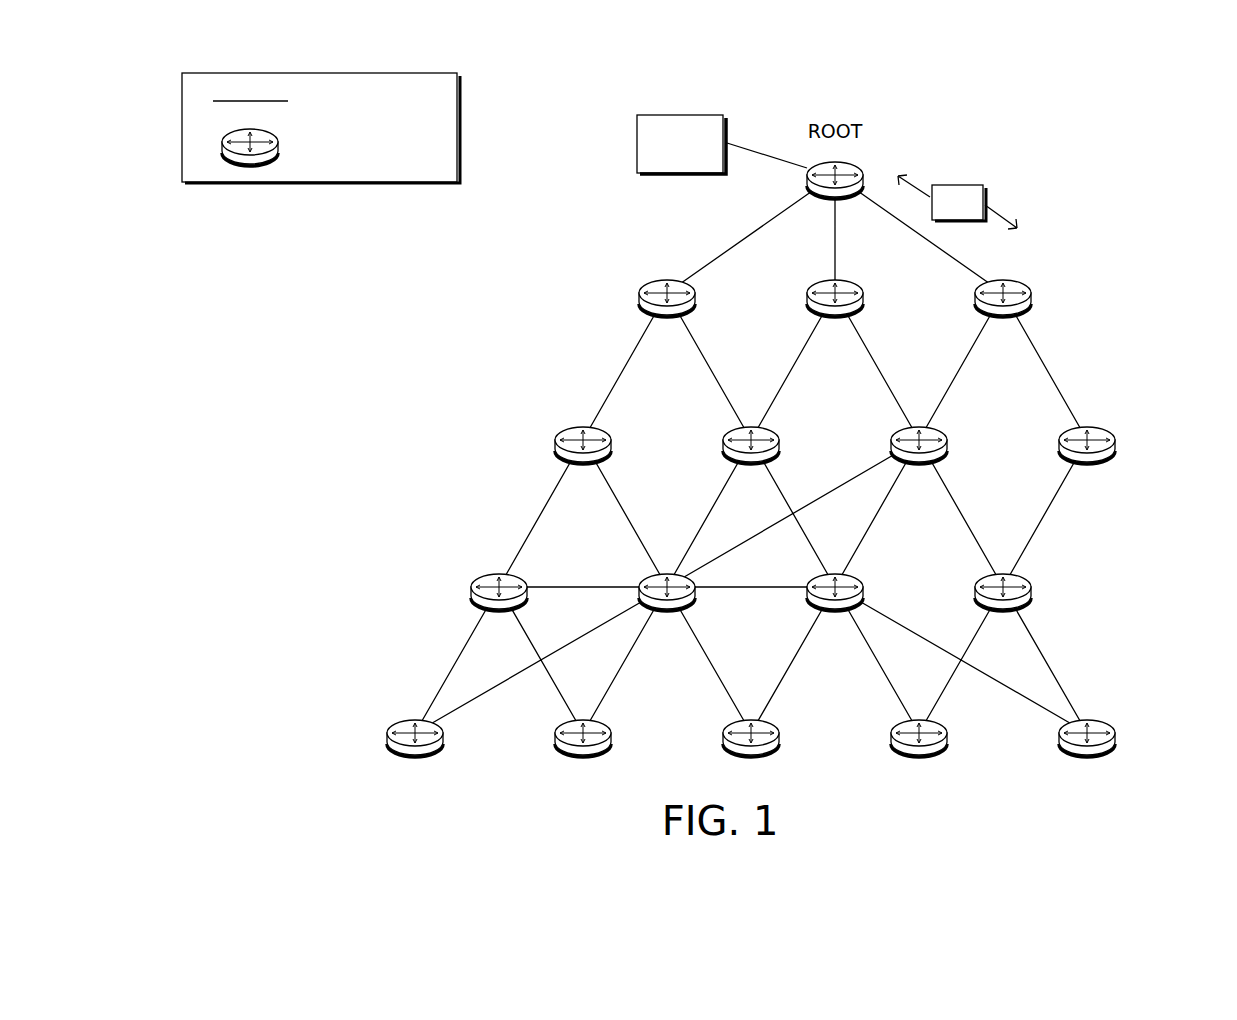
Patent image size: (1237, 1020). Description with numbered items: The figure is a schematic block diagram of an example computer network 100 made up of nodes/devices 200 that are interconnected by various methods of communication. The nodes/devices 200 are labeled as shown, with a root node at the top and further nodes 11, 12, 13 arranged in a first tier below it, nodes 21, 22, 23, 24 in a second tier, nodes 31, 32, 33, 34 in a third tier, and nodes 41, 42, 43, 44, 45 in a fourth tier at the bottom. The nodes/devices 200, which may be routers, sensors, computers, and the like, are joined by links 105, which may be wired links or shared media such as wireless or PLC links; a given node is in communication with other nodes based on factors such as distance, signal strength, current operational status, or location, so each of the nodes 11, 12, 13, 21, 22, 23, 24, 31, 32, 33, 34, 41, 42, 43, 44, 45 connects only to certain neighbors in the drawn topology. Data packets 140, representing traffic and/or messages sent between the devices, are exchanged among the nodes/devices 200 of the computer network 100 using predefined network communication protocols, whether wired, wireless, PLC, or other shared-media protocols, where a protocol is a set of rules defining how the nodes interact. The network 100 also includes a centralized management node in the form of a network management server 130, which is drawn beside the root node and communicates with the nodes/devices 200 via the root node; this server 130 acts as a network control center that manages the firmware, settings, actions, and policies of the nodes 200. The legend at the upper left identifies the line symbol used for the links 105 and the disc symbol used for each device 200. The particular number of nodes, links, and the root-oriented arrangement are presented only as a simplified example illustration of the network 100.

The computer network 100 is at (1174, 125).
The links 105 is at (650, 410).
The network management server 130 is at (665, 167).
The data packets 140 is at (972, 214).
The nodes/devices 200 is at (329, 147).
The node 11 is at (667, 316).
The node 12 is at (835, 316).
The node 13 is at (1003, 316).
The node 21 is at (583, 463).
The node 22 is at (751, 463).
The node 23 is at (919, 463).
The node 24 is at (1087, 463).
The node 31 is at (499, 609).
The node 32 is at (667, 609).
The node 33 is at (835, 609).
The node 34 is at (1003, 609).
The node 41 is at (415, 755).
The node 42 is at (583, 755).
The node 43 is at (751, 755).
The node 44 is at (919, 755).
The node 45 is at (1087, 755).